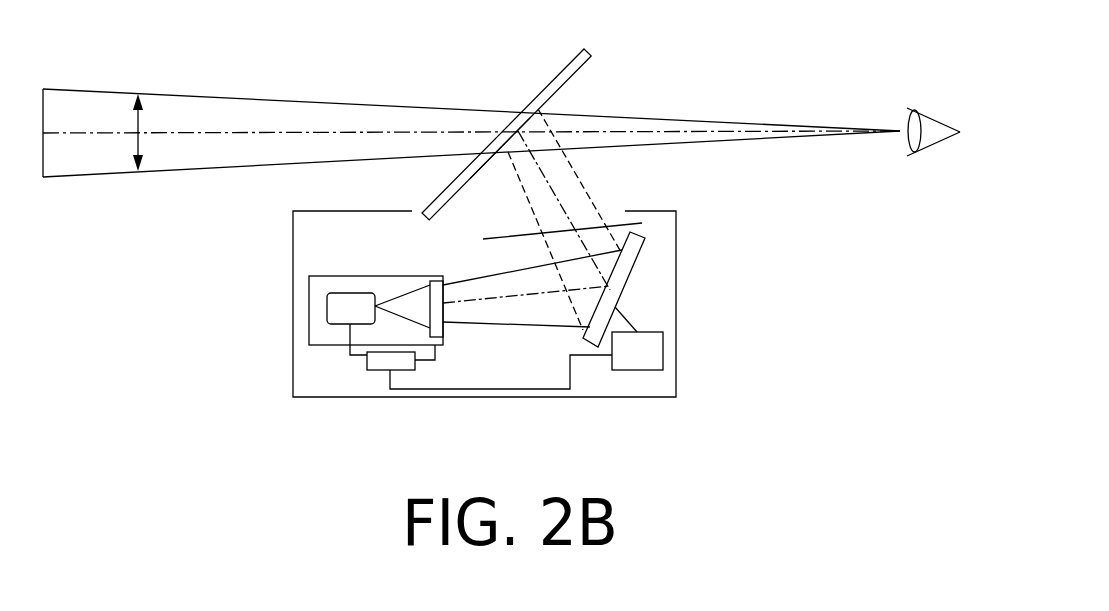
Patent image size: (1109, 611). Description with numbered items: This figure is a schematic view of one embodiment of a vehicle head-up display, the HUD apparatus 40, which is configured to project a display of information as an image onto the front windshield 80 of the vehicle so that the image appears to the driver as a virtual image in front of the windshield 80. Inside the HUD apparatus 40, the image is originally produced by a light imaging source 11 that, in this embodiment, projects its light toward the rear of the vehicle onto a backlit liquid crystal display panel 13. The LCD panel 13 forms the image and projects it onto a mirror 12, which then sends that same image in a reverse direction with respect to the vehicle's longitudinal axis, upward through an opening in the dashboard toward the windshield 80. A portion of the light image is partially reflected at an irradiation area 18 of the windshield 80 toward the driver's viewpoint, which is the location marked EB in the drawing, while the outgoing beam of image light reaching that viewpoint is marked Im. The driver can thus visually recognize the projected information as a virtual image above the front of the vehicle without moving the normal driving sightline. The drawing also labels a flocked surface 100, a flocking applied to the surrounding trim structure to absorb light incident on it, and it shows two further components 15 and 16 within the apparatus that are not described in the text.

The image light / display image Im is at (60, 105).
The eye of observer EB is at (931, 118).
The front windshield 80 is at (563, 72).
The irradiation area 18 is at (498, 169).
The flocked surface 100 is at (331, 196).
The HUD apparatus 40 is at (677, 299).
The light imaging source 11 is at (327, 304).
The liquid crystal display (LCD) panel 13 is at (446, 331).
The control unit 16 is at (377, 371).
The mirror 12 is at (637, 263).
The mirror drive unit 15 is at (663, 347).